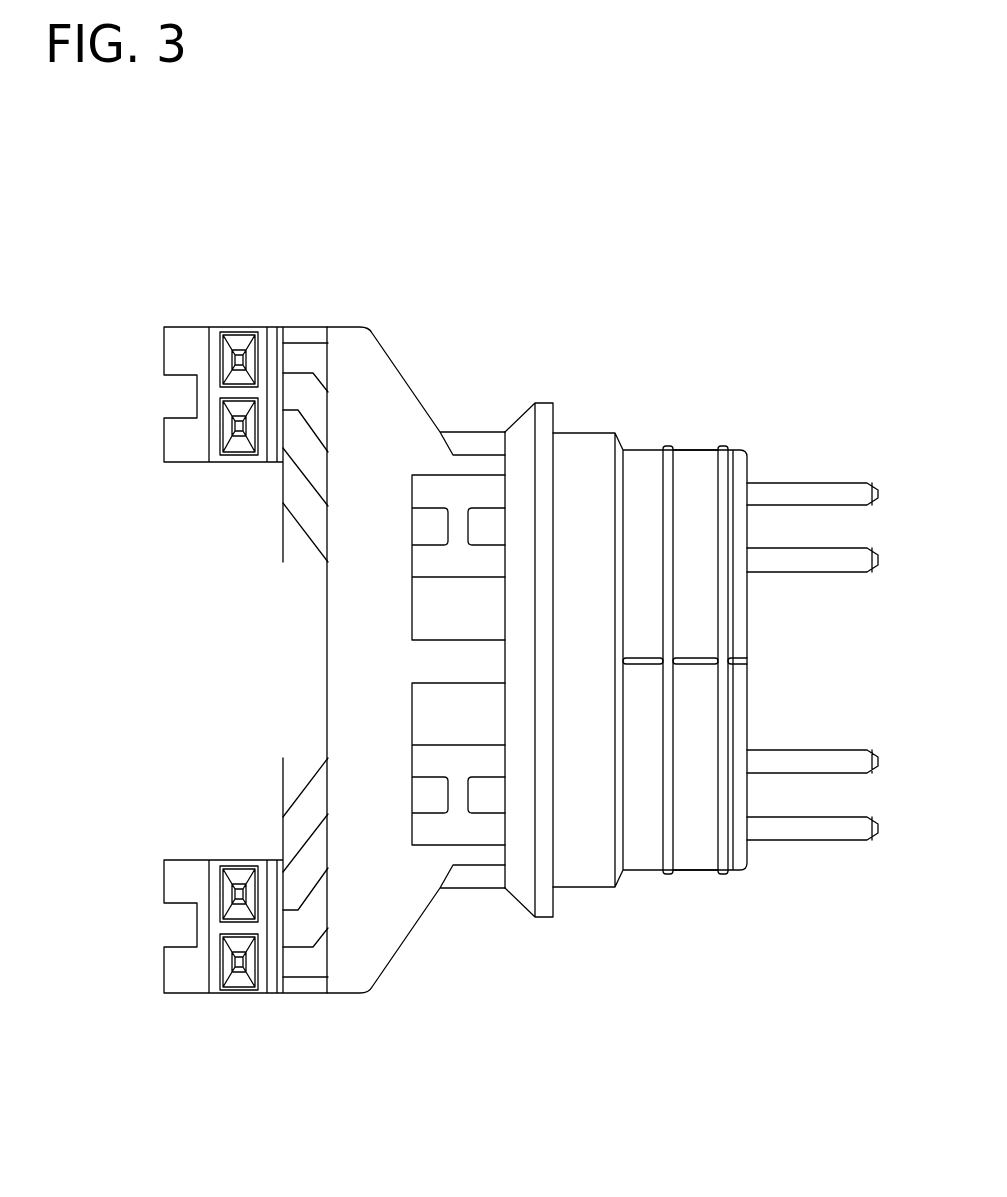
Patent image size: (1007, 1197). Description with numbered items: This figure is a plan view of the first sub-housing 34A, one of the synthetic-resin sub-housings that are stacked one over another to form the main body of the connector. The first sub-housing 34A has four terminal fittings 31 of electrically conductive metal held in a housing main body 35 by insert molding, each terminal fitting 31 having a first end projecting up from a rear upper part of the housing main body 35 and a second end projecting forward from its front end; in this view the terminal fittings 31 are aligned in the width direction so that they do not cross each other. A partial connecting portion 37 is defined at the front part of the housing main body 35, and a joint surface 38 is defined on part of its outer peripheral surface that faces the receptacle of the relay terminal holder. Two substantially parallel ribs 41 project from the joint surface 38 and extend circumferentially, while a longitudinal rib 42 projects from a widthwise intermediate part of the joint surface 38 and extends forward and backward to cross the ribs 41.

The terminal fitting 31 is at (240, 358).
The first sub-housing 34A is at (446, 278).
The housing main body 35 is at (525, 440).
The partial connecting portion 37 is at (700, 383).
The rib 41 is at (667, 470).
The longitudinal rib 42 is at (697, 658).
The joint surface 38 is at (698, 832).